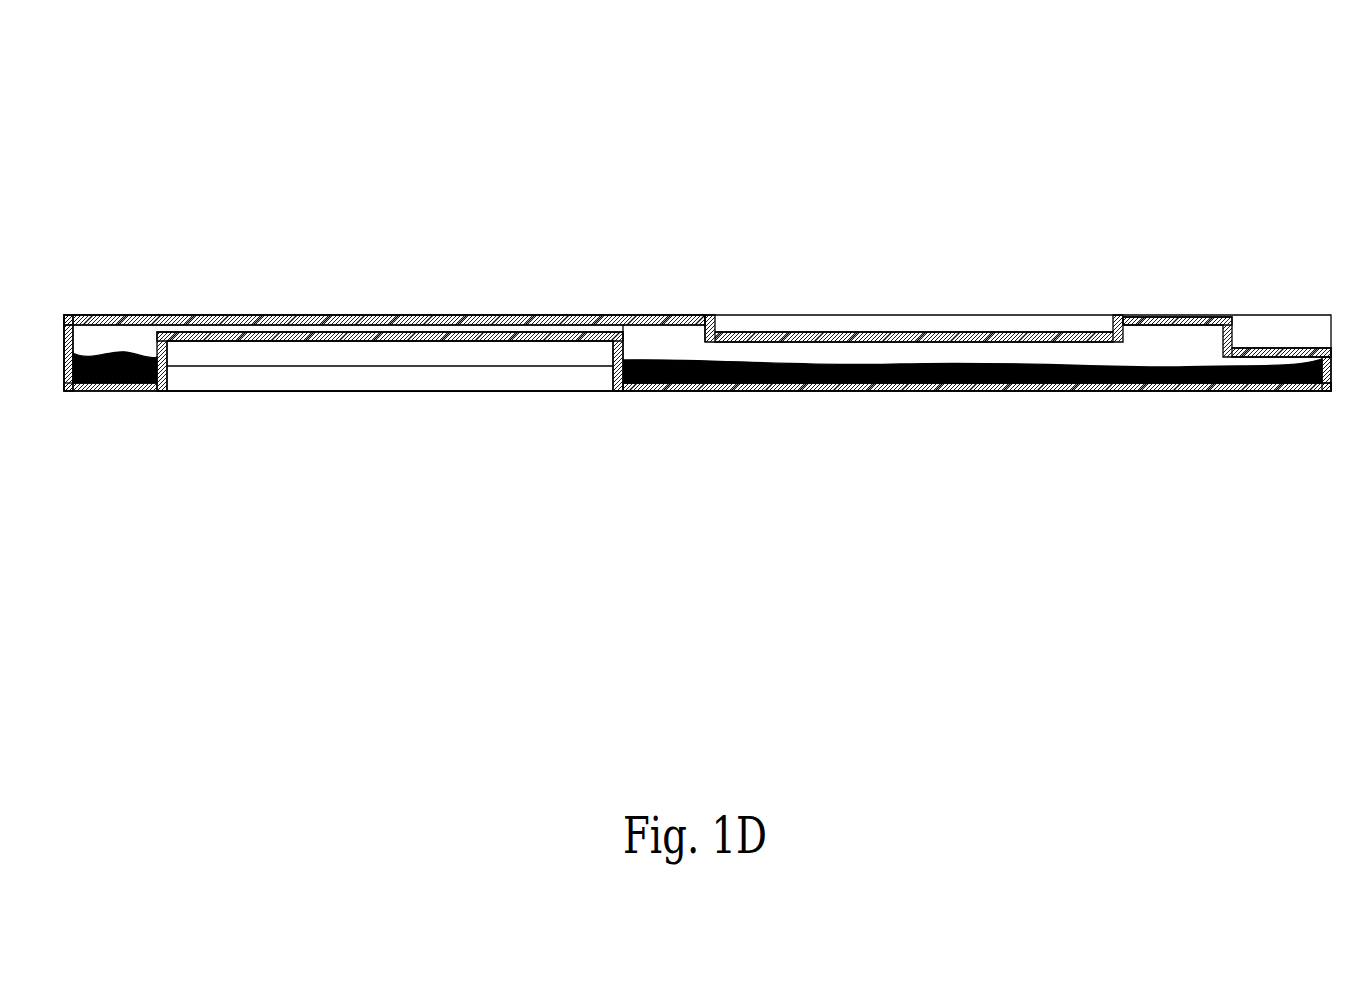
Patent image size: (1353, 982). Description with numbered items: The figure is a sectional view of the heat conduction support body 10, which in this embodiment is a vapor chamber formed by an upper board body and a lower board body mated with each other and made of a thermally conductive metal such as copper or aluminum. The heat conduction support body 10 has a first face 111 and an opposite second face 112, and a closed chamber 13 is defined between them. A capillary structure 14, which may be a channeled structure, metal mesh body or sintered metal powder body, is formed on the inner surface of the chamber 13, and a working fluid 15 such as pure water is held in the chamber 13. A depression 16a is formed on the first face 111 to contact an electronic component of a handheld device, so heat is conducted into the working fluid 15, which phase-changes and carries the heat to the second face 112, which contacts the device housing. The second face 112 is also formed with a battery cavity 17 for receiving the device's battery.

The heat conduction support body 10 is at (1242, 82).
The first face 111 is at (389, 315).
The second face 112 is at (1063, 392).
The closed chamber 13 is at (1100, 347).
The capillary structure 14 is at (657, 340).
The working fluid 15 is at (1177, 368).
The depression 16a is at (933, 325).
The battery cavity 17 is at (333, 350).